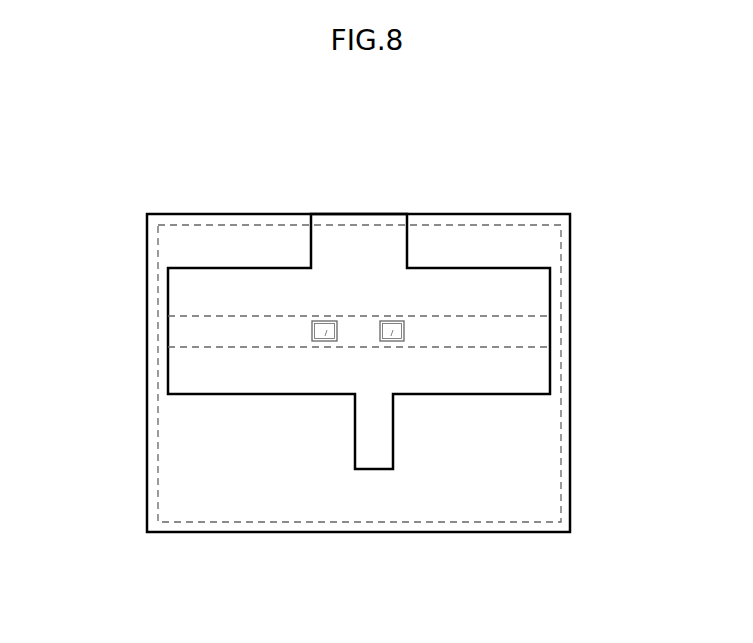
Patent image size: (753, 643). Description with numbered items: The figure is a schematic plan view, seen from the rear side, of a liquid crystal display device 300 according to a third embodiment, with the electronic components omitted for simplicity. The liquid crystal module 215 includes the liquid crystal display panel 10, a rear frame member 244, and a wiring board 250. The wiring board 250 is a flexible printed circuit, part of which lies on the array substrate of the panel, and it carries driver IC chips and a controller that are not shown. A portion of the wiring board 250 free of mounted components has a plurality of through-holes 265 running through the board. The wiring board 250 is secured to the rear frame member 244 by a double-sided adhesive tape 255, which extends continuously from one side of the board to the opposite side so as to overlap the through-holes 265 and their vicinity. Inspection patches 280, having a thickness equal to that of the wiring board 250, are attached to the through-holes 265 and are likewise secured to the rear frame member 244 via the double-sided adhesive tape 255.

The liquid crystal display device 300 is at (633, 152).
The liquid crystal module 215 is at (146, 435).
The rear frame member 244 is at (570, 499).
The wiring board 250 is at (493, 285).
The liquid crystal display panel 10 is at (561, 308).
The double-sided adhesive tape 255 is at (247, 332).
The through-holes 265 is at (322, 321).
The inspection patches 280 is at (392, 341).